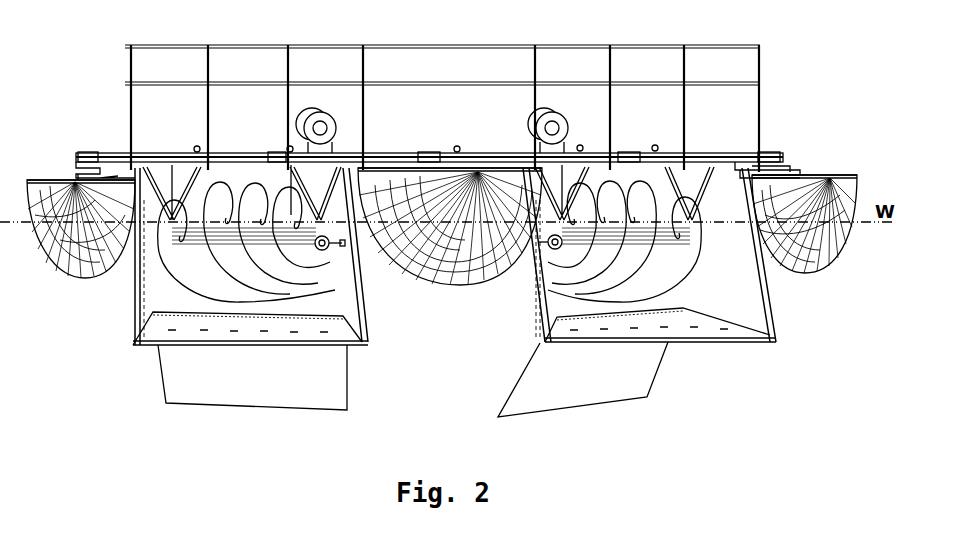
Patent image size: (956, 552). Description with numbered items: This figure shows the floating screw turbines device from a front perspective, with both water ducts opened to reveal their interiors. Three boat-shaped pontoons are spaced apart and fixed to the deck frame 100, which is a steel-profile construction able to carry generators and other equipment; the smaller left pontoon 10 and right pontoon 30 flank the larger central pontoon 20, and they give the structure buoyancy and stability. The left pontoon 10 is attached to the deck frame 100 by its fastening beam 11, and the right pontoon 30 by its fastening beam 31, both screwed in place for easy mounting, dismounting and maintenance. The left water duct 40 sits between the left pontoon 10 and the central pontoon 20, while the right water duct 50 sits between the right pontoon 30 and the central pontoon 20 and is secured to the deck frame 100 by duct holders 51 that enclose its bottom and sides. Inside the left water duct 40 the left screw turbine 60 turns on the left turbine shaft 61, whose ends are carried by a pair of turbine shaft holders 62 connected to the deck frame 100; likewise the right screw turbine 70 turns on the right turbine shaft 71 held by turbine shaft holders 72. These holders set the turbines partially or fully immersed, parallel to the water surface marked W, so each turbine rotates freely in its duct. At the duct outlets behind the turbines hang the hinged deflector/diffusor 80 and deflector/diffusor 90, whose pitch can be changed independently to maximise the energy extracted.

The left pontoon 10 is at (62, 262).
The fastening beam 11 is at (75, 178).
The central pontoon 20 is at (418, 233).
The right pontoon 30 is at (827, 247).
The fastening beam 31 is at (806, 173).
The left water duct 40 is at (135, 305).
The right water duct 50 is at (743, 280).
The duct holders 51 is at (523, 313).
The left screw turbine 60 is at (278, 288).
The left turbine shaft 61 is at (322, 248).
The turbine shaft holders 62 is at (187, 190).
The right screw turbine 70 is at (640, 306).
The right turbine shaft 71 is at (553, 252).
The turbine shaft holders 72 is at (593, 165).
The deflector/diffusor 80 is at (177, 386).
The deflector/diffusor 90 is at (518, 397).
The deck frame 100 is at (118, 157).